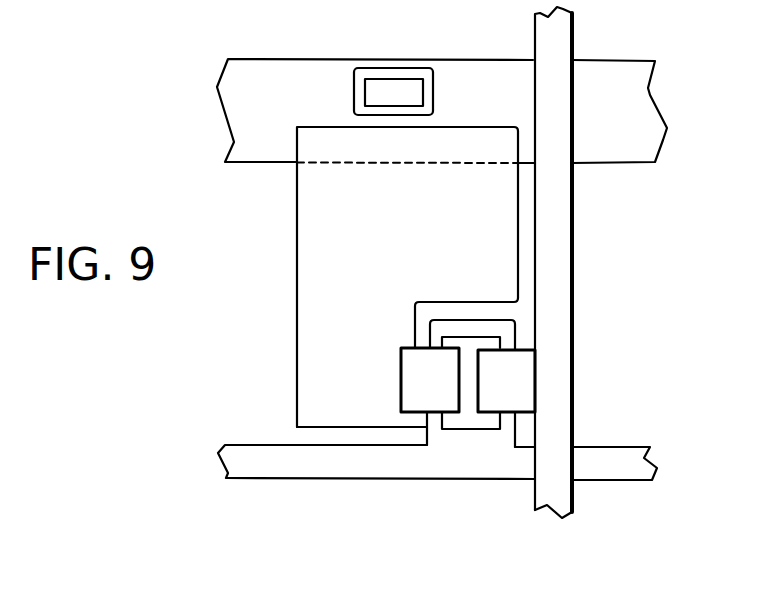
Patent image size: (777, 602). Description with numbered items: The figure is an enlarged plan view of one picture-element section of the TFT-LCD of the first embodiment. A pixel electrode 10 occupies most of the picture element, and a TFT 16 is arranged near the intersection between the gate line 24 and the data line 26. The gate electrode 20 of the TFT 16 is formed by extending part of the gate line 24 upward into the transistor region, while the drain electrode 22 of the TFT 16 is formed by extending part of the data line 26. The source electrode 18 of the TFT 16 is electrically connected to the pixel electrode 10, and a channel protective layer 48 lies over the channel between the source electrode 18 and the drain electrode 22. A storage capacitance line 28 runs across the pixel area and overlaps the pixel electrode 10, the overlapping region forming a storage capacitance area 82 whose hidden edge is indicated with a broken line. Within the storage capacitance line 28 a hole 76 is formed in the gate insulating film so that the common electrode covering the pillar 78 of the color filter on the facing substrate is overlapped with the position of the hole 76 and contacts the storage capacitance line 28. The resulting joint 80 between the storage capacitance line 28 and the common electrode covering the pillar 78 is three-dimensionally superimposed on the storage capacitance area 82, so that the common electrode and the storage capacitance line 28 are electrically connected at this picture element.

The pixel electrode 10 is at (310, 268).
The TFT 16 is at (515, 518).
The source electrode 18 is at (422, 400).
The gate electrode 20 is at (473, 443).
The drain electrode 22 is at (505, 397).
The gate line 24 is at (618, 452).
The data line 26 is at (563, 48).
The storage capacitance line 28 is at (646, 116).
The channel protective layer 48 is at (463, 422).
The hole 76 is at (447, 82).
The pillar 78 is at (393, 90).
The joint 80 is at (380, 68).
The storage capacitance area 82 is at (337, 143).